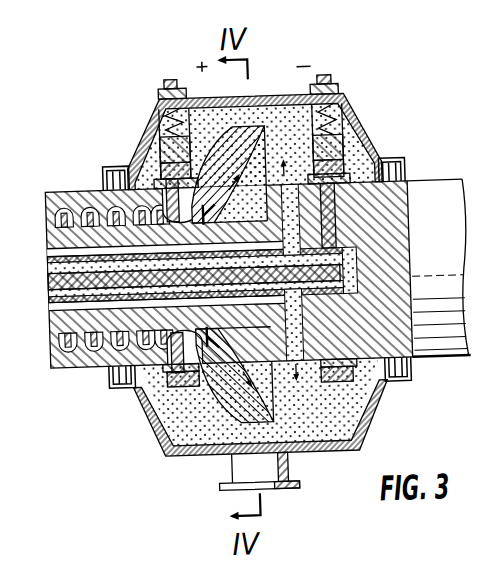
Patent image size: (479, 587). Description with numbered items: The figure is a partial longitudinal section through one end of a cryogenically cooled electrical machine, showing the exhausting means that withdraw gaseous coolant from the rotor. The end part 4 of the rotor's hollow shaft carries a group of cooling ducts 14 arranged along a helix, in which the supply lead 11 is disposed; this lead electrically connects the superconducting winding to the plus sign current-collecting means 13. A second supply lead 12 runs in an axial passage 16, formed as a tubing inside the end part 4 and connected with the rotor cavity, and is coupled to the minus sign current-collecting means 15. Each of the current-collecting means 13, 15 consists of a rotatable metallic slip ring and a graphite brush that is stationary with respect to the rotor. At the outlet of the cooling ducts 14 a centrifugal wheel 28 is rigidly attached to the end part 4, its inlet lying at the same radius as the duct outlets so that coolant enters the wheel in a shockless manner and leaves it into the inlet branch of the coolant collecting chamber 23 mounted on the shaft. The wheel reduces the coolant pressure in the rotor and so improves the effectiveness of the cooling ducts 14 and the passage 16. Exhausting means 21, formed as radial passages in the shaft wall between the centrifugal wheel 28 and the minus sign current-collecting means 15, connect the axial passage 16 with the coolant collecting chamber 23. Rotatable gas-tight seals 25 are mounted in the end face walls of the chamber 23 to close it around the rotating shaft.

The end part of the hollow shaft of the rotor 4 is at (430, 199).
The supply lead 11 is at (86, 363).
The supply lead 12 is at (50, 274).
The plus sign current-collecting means 13 is at (164, 165).
The cooling ducts 14 is at (82, 211).
The minus sign current-collecting means 15 is at (347, 169).
The axial passage 16 is at (53, 252).
The exhausting means 21 is at (294, 364).
The coolant collecting chamber 23 is at (328, 454).
The rotatable gas-tight seals 25 is at (117, 385).
The centrifugal wheel 28 is at (249, 140).